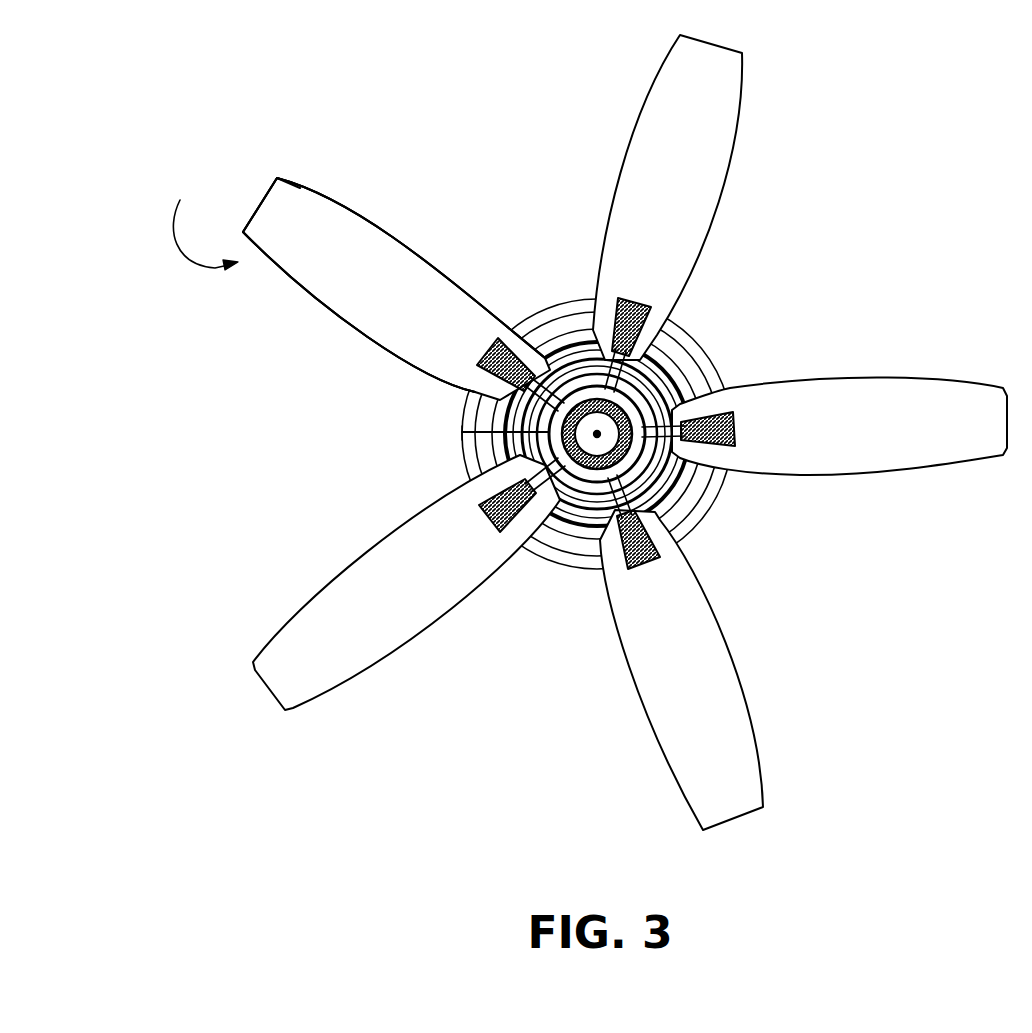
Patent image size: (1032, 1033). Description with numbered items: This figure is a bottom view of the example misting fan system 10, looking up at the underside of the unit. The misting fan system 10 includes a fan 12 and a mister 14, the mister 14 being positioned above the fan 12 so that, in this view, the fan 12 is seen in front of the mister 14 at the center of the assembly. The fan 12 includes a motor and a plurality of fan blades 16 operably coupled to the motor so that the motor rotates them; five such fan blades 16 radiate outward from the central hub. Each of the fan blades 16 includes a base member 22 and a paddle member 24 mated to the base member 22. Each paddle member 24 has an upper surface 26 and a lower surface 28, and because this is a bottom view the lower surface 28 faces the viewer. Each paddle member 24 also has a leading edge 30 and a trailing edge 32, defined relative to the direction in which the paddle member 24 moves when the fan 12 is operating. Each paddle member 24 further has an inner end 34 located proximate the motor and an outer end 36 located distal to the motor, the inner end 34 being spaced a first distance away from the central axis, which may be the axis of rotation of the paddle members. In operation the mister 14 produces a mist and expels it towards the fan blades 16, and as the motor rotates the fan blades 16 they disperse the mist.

The misting fan system 10 is at (550, 432).
The fan 12 is at (665, 383).
The mister 14 is at (535, 302).
The fan blades 16 is at (323, 267).
The base member 22 is at (490, 428).
The paddle member 24 is at (333, 233).
The upper surface 26 is at (200, 221).
The lower surface 28 is at (275, 202).
The leading edge 30 is at (333, 313).
The trailing edge 32 is at (389, 230).
The inner end 34 is at (556, 312).
The outer end 36 is at (290, 213).